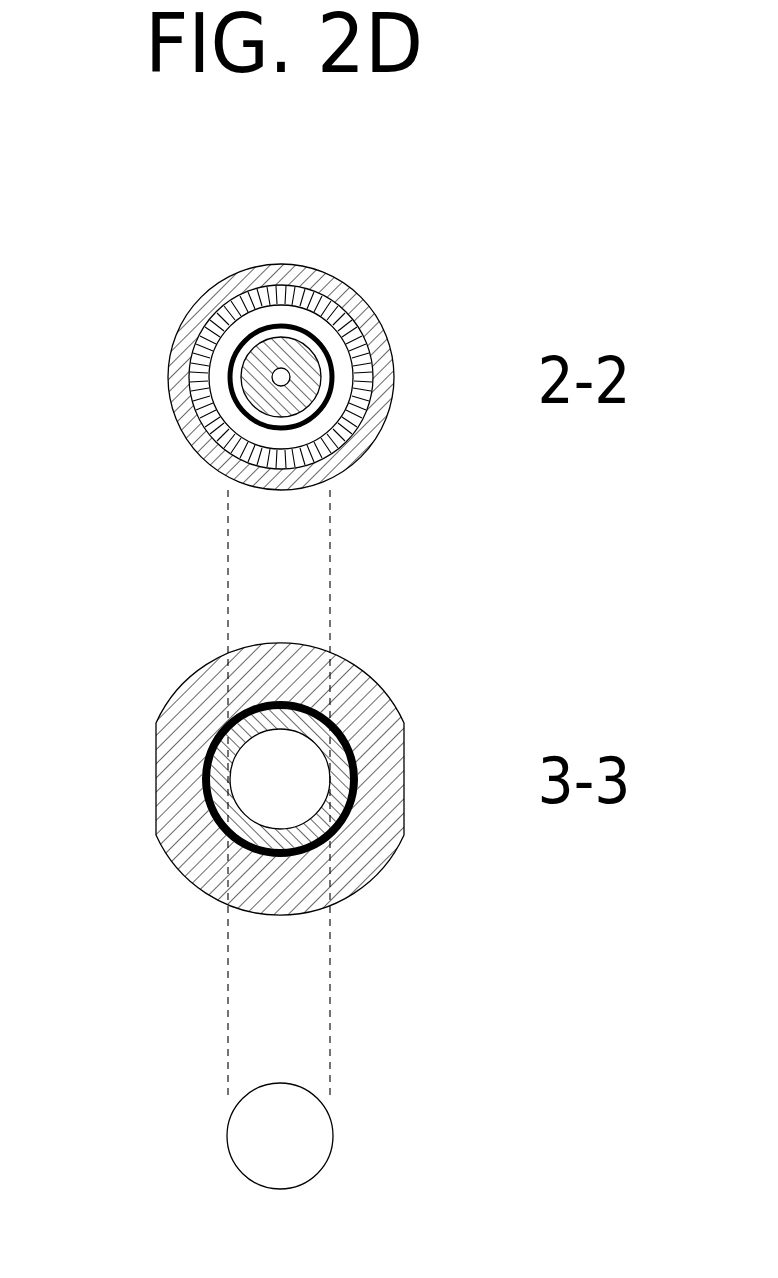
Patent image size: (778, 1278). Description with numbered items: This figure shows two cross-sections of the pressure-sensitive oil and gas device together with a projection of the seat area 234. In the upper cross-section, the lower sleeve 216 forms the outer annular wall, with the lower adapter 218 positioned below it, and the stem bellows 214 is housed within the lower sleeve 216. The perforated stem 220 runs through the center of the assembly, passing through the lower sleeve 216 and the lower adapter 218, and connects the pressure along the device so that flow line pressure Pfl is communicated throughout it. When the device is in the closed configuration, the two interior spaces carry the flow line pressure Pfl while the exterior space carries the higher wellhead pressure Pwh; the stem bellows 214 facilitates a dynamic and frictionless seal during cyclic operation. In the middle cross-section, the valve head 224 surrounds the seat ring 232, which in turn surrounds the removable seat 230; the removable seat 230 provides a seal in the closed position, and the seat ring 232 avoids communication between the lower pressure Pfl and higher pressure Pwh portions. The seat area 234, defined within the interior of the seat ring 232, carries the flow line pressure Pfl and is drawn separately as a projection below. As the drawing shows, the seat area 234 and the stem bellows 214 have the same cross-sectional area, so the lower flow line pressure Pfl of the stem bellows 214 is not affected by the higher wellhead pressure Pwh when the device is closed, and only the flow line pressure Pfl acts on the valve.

The stem bellows 214 is at (180, 331).
The lower sleeve 216 is at (207, 297).
The lower adapter 218 is at (258, 265).
The perforated stem 220 is at (335, 330).
The valve head 224 is at (190, 717).
The removable seat 230 is at (350, 829).
The seat ring 232 is at (350, 779).
The seat area 234 is at (348, 720).
The flow line pressure Pfl is at (340, 352).
The wellhead pressure Pwh is at (337, 462).